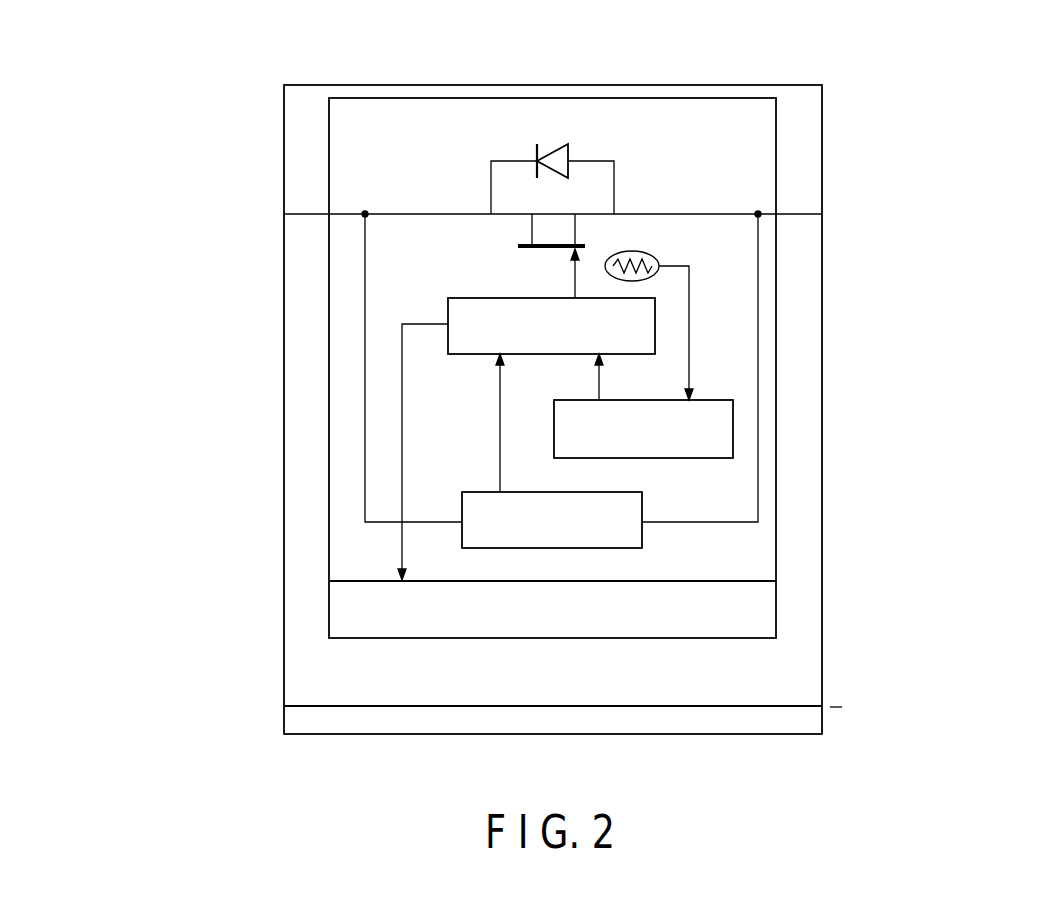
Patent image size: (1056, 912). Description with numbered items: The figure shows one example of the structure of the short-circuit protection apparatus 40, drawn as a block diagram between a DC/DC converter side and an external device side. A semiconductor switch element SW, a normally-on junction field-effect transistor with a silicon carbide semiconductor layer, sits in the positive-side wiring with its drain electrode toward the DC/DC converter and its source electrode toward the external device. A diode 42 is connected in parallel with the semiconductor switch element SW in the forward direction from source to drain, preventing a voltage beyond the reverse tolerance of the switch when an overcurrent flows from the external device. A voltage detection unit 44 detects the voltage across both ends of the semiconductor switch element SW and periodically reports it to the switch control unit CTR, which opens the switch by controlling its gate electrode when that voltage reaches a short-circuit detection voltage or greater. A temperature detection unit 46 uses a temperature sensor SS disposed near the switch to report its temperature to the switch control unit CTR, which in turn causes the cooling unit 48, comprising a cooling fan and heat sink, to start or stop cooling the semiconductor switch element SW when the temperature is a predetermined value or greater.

The short-circuit protection apparatus 40 is at (764, 68).
The diode 42 is at (572, 150).
The voltage detection unit 44 is at (644, 540).
The temperature detection unit 46 is at (715, 459).
The cooling unit 48 is at (735, 640).
The semiconductor switch element SW is at (530, 249).
The temperature sensor SS is at (656, 257).
The switch control unit CTR is at (478, 357).